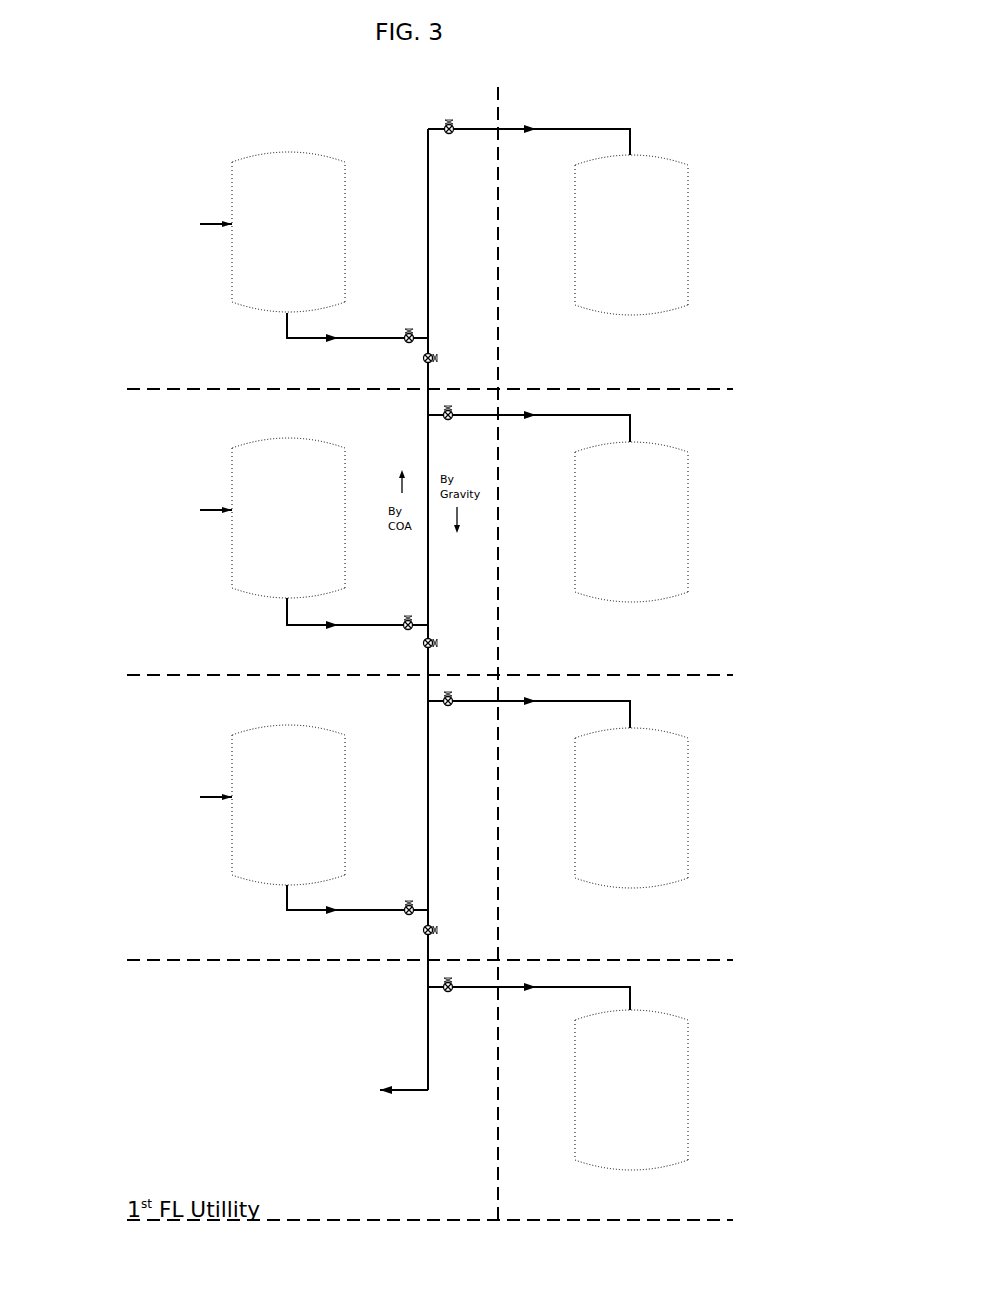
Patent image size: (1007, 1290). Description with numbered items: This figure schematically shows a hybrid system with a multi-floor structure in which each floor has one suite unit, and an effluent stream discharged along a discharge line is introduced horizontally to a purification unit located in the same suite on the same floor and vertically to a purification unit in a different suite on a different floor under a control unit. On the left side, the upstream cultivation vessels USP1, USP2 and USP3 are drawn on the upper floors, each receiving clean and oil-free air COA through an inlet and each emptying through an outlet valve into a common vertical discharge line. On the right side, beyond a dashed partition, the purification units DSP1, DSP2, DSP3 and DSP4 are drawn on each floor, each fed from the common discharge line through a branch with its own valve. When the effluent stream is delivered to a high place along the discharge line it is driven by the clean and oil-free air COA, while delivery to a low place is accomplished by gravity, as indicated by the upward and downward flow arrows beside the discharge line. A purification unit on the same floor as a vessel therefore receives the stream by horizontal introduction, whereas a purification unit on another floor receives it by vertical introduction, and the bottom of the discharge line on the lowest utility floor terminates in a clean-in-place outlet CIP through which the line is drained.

The upstream processing tank 1 (4th floor) USP1 is at (277, 271).
The upstream processing tank 2 (3rd floor) USP2 is at (277, 556).
The upstream processing tank 3 (2nd floor) USP3 is at (277, 843).
The downstream processing tank 1 DSP1 is at (570, 255).
The downstream processing tank 2 DSP2 is at (570, 541).
The downstream processing tank 3 DSP3 is at (570, 827).
The downstream processing tank 4 DSP4 is at (570, 1100).
The clean and oil-free air COA is at (146, 511).
The clean-in-place outlet CIP is at (359, 1089).